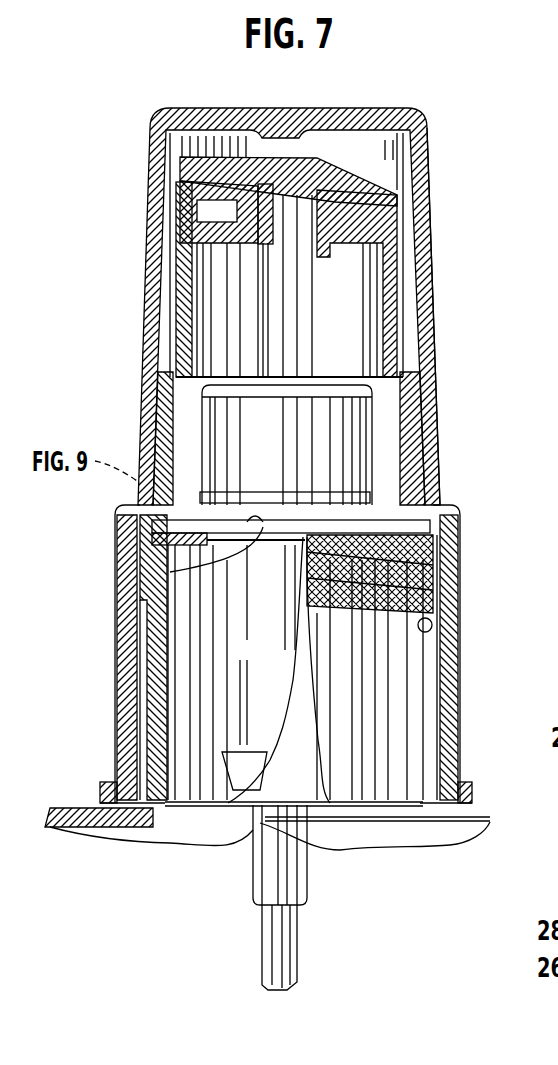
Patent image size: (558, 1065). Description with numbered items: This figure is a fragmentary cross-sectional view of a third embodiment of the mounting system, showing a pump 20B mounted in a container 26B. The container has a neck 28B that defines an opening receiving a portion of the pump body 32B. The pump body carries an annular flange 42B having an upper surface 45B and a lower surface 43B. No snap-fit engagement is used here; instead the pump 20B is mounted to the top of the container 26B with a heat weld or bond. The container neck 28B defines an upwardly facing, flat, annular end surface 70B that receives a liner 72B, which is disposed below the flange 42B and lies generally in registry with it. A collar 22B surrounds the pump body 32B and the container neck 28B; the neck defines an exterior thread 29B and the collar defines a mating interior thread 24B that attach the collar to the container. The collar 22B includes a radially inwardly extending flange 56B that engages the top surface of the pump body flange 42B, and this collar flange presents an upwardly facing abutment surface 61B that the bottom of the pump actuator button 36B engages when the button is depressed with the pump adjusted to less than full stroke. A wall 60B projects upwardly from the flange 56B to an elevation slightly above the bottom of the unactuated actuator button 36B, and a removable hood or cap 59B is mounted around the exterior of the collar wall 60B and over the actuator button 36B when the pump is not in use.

The pump 20B is at (405, 170).
The pump actuator button 36B is at (398, 236).
The removable hood or cap 59B is at (423, 310).
The wall 60B is at (430, 375).
The pump body 32B is at (388, 412).
The abutment surface 61B is at (400, 444).
The flange 56B is at (400, 468).
The flange 42B is at (457, 517).
The liner 72B is at (445, 535).
The collar 22B is at (468, 570).
The interior thread 24B is at (433, 620).
The exterior thread 29B is at (400, 648).
The neck 28B is at (400, 700).
The container 26B is at (474, 806).
The annular end surface 70B is at (152, 538).
The upper surface 45B is at (137, 578).
The lower surface 43B is at (265, 550).